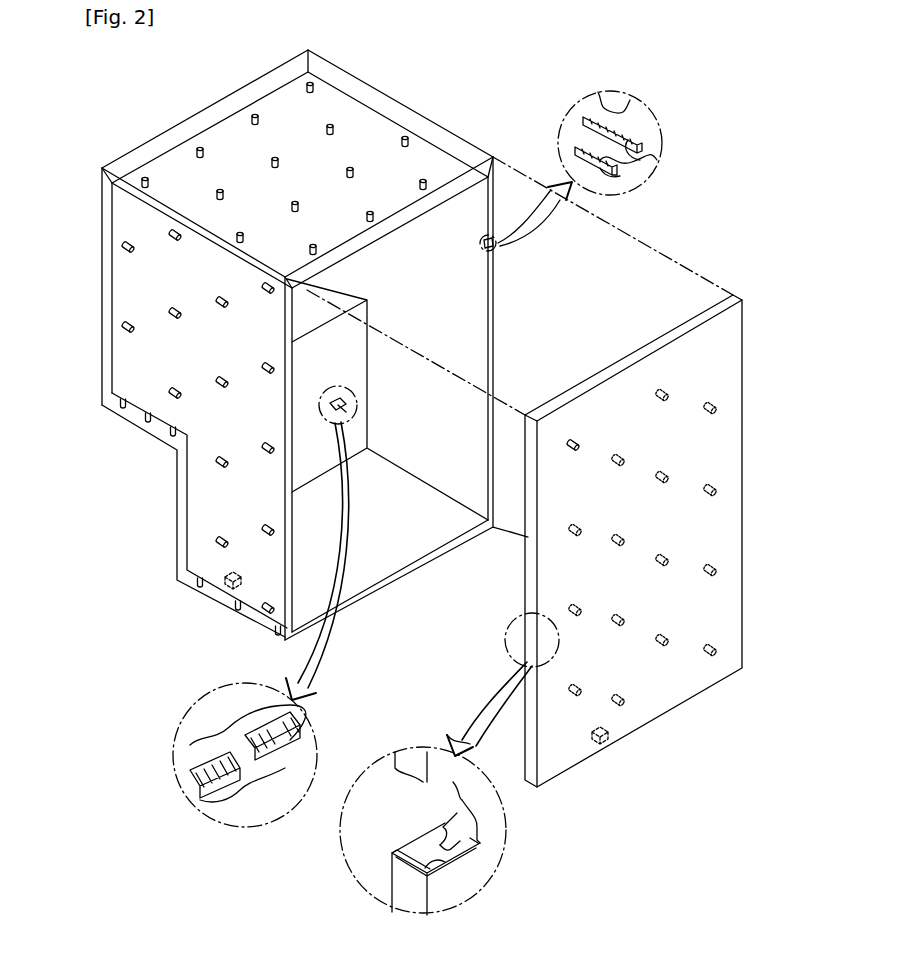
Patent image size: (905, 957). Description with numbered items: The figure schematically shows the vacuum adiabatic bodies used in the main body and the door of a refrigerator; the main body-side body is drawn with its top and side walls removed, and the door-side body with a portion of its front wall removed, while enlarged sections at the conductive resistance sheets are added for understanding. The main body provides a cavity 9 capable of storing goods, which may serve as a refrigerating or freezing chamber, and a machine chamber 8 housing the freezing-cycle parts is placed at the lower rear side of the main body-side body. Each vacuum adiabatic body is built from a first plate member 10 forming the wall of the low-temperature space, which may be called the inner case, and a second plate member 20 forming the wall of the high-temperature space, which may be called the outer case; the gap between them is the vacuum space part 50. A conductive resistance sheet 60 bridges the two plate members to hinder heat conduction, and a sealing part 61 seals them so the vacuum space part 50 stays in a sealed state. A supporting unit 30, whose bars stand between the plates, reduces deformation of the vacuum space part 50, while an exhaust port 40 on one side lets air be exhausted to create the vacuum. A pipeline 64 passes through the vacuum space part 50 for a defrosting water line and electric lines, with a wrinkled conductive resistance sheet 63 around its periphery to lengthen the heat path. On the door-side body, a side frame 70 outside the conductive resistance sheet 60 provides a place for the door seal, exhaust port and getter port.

The machine chamber 8 is at (143, 470).
The cavity 9 is at (447, 337).
The first plate member 10 is at (480, 370).
The second plate member 20 is at (442, 122).
The supporting unit 30 is at (123, 249).
The exhaust port 40 is at (222, 594).
The vacuum space part 50 is at (131, 229).
The conductive resistance sheet 60 is at (625, 166).
The sealing part 61 is at (605, 185).
The wrinkled conductive resistance sheet 63 is at (190, 760).
The pipeline 64 is at (256, 770).
The side frame 70 is at (408, 838).